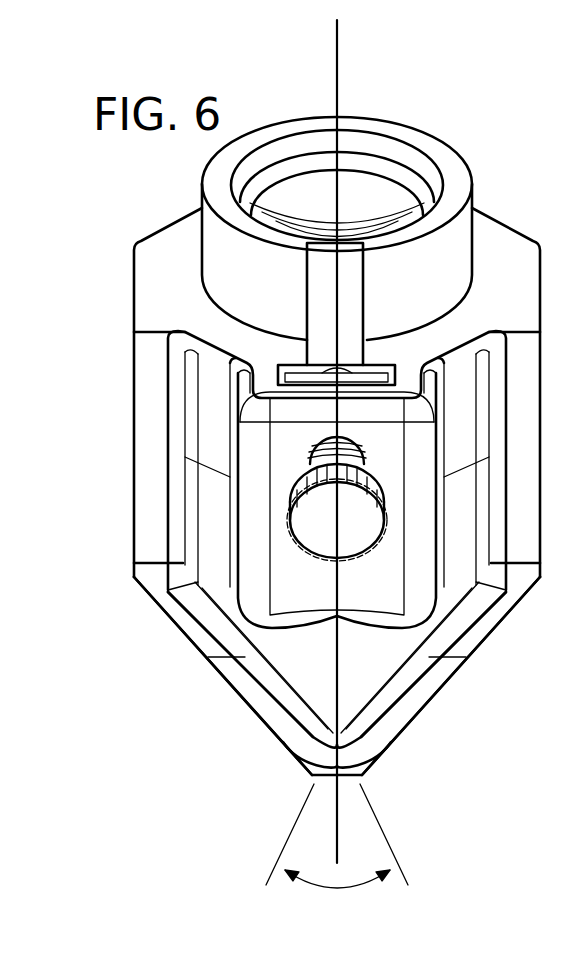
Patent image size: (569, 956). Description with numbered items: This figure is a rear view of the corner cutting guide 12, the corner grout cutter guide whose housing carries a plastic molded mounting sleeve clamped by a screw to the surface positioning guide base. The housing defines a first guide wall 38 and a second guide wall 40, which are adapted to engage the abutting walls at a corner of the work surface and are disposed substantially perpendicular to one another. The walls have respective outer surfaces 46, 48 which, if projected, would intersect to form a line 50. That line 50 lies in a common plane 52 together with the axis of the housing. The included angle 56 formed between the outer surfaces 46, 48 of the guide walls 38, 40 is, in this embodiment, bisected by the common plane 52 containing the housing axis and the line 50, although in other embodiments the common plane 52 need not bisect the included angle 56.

The corner cutting guide 12 is at (133, 212).
The first guide wall 38 is at (242, 703).
The second guide wall 40 is at (430, 703).
The outer surface of first guide wall 46 is at (273, 740).
The outer surface of second guide wall 48 is at (398, 740).
The line 50 is at (333, 804).
The common plane 52 is at (337, 62).
The included angle 56 is at (352, 885).